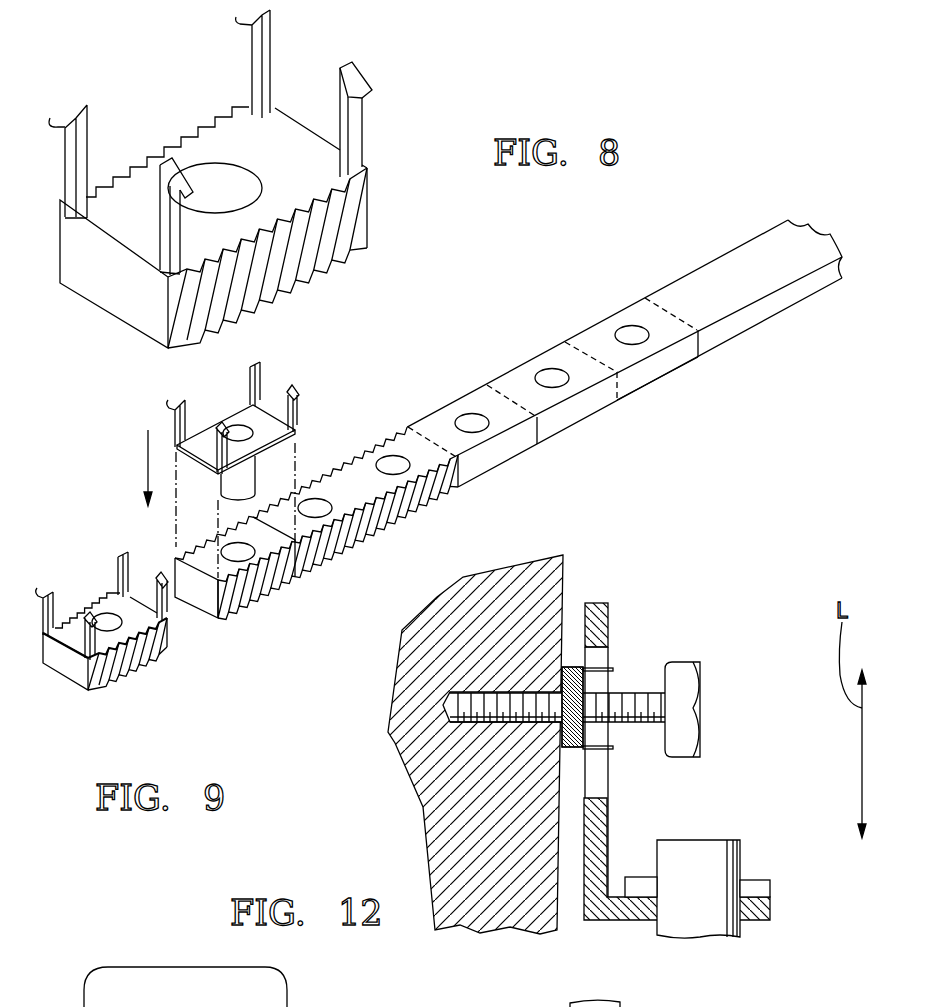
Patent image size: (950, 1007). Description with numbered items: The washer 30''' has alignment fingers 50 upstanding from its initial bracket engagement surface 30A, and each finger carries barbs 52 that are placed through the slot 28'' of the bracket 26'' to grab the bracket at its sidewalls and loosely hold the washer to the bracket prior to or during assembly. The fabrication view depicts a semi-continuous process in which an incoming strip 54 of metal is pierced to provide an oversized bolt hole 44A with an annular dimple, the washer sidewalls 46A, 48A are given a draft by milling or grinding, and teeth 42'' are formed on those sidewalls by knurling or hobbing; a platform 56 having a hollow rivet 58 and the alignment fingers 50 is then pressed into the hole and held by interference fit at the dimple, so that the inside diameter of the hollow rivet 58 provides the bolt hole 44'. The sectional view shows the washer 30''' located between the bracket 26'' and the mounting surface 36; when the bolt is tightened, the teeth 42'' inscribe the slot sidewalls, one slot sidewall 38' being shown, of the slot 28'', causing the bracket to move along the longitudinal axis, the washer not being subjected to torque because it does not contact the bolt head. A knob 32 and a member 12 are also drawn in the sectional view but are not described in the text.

In FIG. 8, the tab 52 is at (240, 23).
In FIG. 8, the prong 50 is at (165, 207).
In FIG. 9, the prong 50 is at (178, 440).
In FIG. 8, the nut body 30A is at (285, 135).
In FIG. 8, the nut 30''' is at (281, 175).
In FIG. 9, the nut 30''' is at (151, 621).
In FIG. 12, the nut 30''' is at (630, 732).
In FIG. 9, the rack bar 54 is at (508, 391).
In FIG. 9, the hole 44A is at (628, 332).
In FIG. 9, the segment 48A is at (604, 329).
In FIG. 9, the side face 46A is at (640, 377).
In FIG. 9, the teeth 42'' is at (342, 487).
In FIG. 12, the teeth 42'' is at (502, 722).
In FIG. 9, the hole 44' is at (274, 391).
In FIG. 9, the nut plate 56 is at (247, 459).
In FIG. 9, the boss 58 is at (222, 482).
In FIG. 12, the wall 36 is at (565, 576).
In FIG. 12, the side plate 26'' is at (659, 738).
In FIG. 12, the slot 38' is at (653, 632).
In FIG. 12, the knob 32 is at (692, 672).
In FIG. 12, the bracket 28'' is at (677, 859).
In FIG. 12, the rail 12 is at (726, 830).